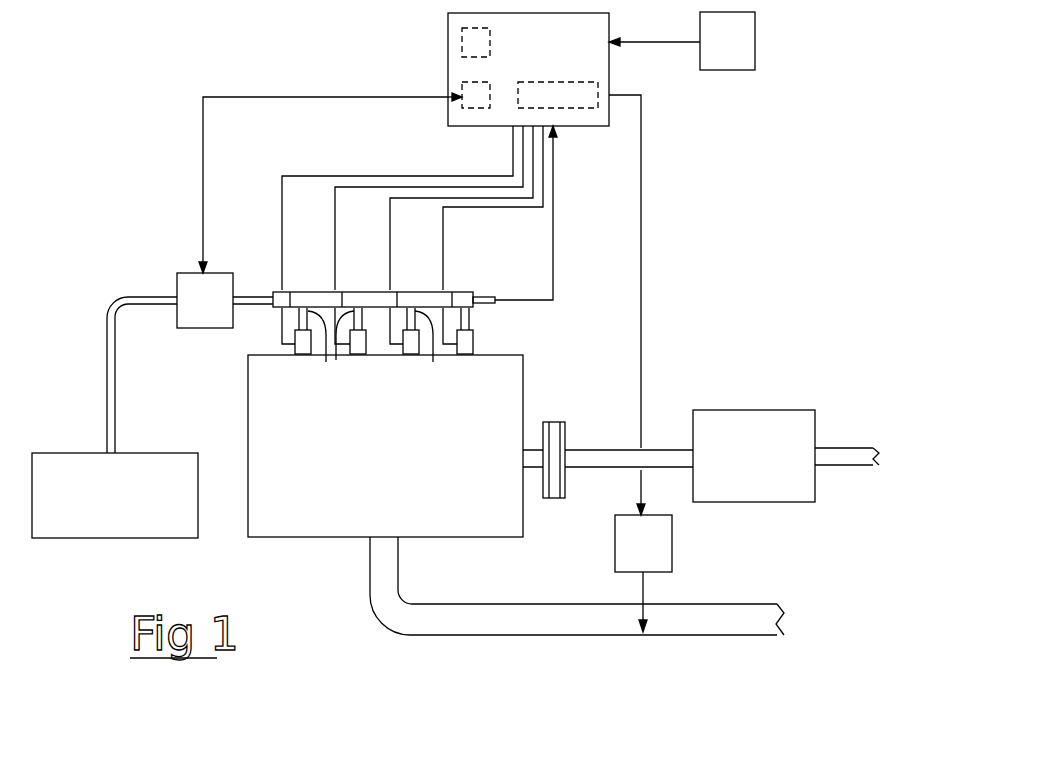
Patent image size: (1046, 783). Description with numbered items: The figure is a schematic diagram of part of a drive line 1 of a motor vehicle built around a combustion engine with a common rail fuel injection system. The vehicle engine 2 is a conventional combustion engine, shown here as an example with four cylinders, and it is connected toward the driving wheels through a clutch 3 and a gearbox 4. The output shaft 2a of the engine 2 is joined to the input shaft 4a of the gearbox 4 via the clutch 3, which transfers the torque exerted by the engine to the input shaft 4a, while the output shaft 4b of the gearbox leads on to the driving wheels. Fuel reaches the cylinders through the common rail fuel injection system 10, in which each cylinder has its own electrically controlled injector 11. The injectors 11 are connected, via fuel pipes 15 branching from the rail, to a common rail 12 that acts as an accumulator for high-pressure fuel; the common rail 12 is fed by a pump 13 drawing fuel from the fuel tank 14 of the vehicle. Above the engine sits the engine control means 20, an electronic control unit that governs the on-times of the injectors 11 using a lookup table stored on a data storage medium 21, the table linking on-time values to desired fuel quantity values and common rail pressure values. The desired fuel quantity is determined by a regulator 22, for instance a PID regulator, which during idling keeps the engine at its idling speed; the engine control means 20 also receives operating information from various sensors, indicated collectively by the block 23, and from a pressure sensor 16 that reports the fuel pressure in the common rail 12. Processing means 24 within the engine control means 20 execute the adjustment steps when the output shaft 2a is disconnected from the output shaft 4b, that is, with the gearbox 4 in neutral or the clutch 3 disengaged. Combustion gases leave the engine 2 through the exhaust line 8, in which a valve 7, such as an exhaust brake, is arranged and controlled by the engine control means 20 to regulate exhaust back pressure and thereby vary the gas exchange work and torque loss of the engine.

The drive line 1 is at (706, 307).
The vehicle engine 2 is at (324, 527).
The output shaft of the engine 2a is at (530, 460).
The clutch 3 is at (562, 442).
The gearbox 4 is at (760, 430).
The input shaft of the gearbox 4a is at (667, 453).
The output shaft of the gearbox 4b is at (837, 450).
The valve 7 is at (640, 642).
The exhaust line 8 is at (490, 625).
The common rail fuel injection system 10 is at (250, 262).
The injectors 11 is at (303, 352).
The common rail 12 is at (373, 272).
The pump 13 is at (197, 287).
The fuel tank 14 is at (102, 527).
The fuel pipes 15 is at (326, 362).
The pressure sensor 16 is at (487, 293).
The engine control means 20 is at (583, 117).
The data storage medium 21 is at (456, 42).
The regulator 22 is at (457, 100).
The sensors 23 is at (720, 63).
The processing means 24 is at (560, 90).